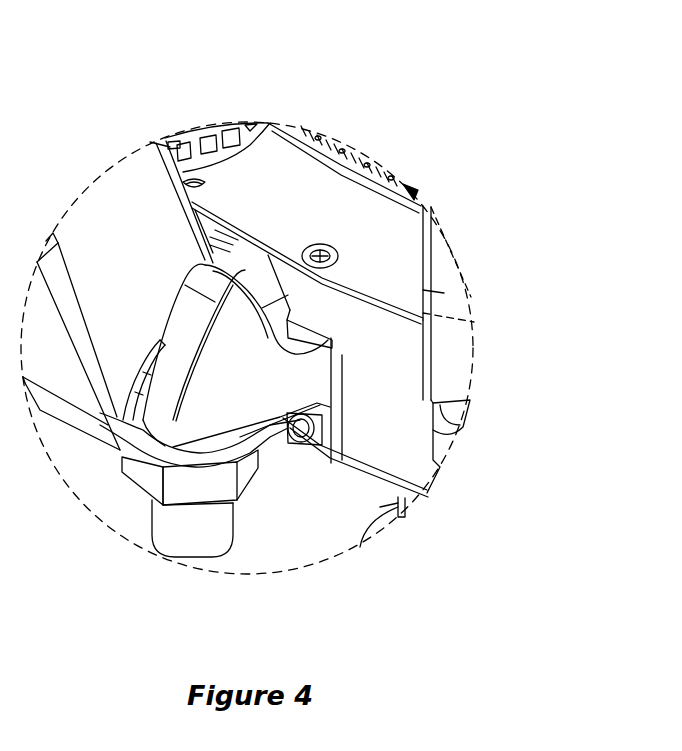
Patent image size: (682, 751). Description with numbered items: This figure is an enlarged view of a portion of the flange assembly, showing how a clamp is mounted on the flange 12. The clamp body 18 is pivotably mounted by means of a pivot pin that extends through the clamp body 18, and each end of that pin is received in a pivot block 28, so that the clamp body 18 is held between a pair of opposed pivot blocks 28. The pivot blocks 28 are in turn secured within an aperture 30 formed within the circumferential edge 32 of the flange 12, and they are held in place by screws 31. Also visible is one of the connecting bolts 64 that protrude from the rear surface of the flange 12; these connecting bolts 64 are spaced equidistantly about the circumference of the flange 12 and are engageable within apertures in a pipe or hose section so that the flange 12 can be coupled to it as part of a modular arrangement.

The flange 12 is at (265, 182).
The clamp body 18 is at (110, 238).
The pivot block 28 is at (270, 393).
The aperture 30 is at (322, 343).
The screw 31 is at (337, 253).
The circumferential edge 32 is at (385, 388).
The connecting bolt 64 is at (180, 522).